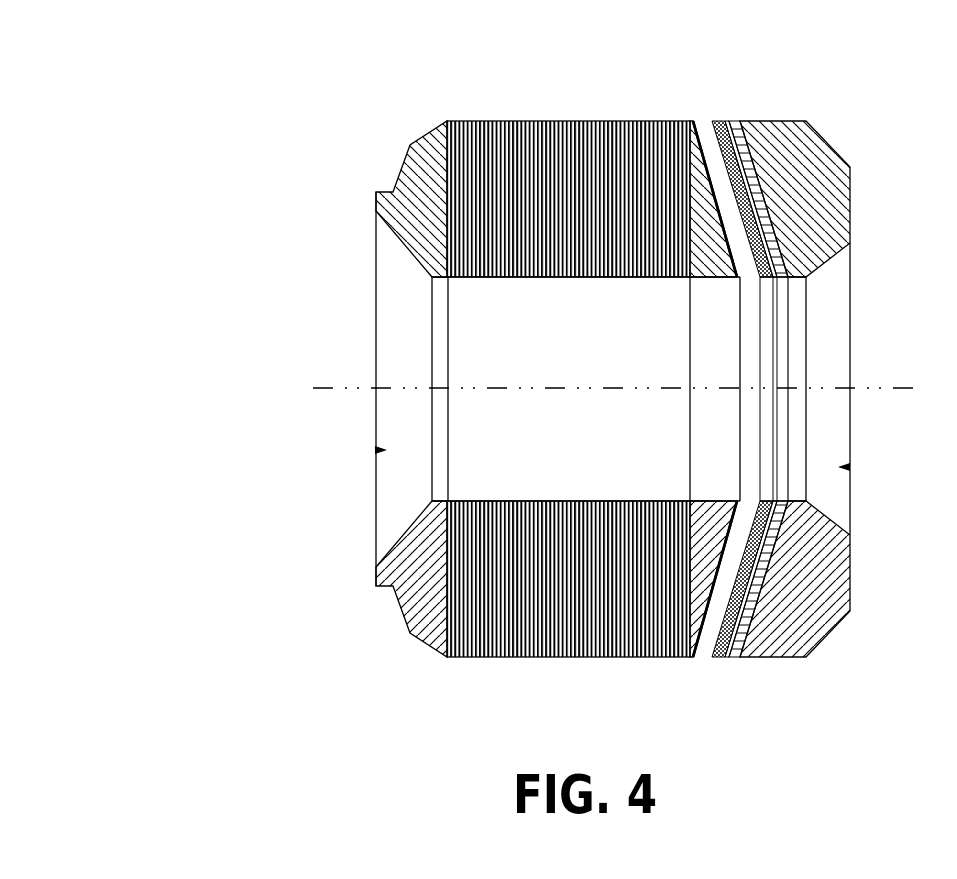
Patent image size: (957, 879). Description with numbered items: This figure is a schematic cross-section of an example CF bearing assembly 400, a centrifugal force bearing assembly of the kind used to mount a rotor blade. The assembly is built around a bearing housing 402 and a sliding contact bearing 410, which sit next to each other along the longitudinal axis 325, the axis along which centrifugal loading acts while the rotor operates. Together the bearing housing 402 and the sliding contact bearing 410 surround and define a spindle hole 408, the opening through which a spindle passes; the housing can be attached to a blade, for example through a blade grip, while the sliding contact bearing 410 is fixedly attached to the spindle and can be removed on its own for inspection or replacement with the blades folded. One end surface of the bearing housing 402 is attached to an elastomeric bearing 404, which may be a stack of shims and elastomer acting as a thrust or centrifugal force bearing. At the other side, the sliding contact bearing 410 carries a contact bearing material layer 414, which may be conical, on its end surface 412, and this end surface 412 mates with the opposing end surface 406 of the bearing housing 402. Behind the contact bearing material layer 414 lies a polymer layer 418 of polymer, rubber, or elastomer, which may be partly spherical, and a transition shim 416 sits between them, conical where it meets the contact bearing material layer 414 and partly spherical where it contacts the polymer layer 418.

The CF bearing assembly 400 is at (513, 380).
The bearing housing 402 is at (392, 148).
The elastomeric bearing 404 is at (485, 121).
The opposing end surface 406 is at (745, 272).
The spindle hole 408 is at (376, 450).
The sliding contact bearing 410 is at (835, 131).
The end surface 412 is at (720, 147).
The contact bearing material layer 414 is at (716, 152).
The transition shim 416 is at (723, 120).
The polymer layer 418 is at (745, 118).
The longitudinal axis 325 is at (327, 388).